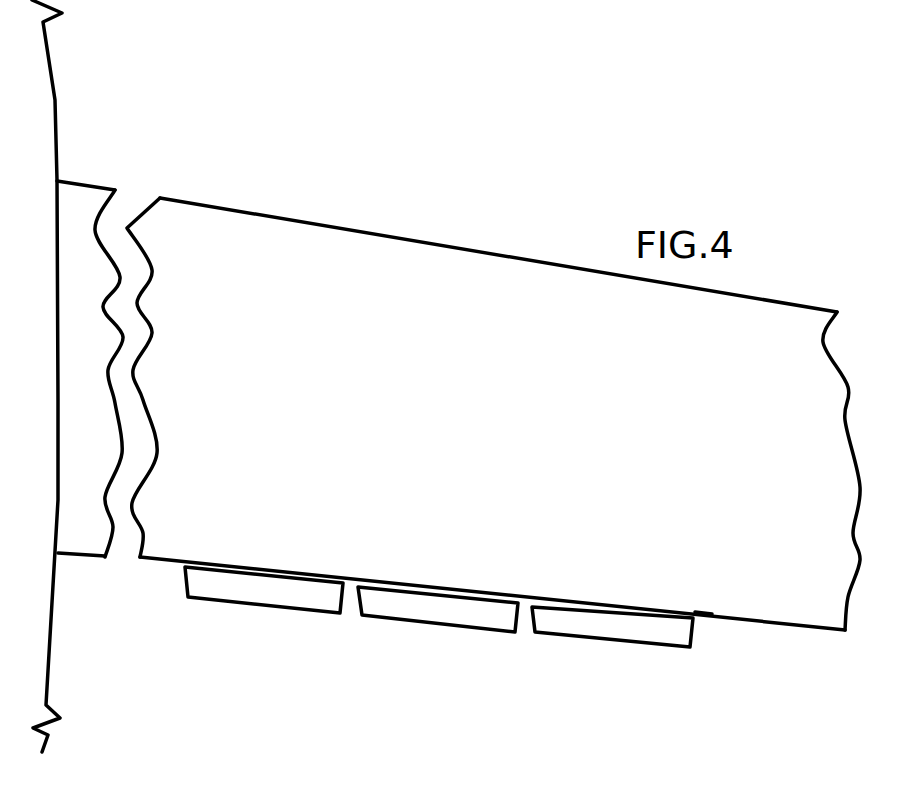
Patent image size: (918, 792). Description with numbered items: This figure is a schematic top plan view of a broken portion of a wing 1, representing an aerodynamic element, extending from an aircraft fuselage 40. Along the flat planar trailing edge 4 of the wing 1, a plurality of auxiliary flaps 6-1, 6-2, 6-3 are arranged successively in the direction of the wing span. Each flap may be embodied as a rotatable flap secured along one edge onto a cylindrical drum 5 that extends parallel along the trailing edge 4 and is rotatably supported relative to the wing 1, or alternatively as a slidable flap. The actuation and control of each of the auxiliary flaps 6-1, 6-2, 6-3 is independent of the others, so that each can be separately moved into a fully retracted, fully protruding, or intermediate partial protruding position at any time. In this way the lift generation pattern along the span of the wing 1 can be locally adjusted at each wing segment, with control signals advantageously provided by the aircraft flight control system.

The aircraft fuselage 40 is at (55, 100).
The wing 1 is at (443, 382).
The trailing edge 4 is at (740, 623).
The cylindrical drum 5 is at (700, 620).
The auxiliary flap 6-1 is at (223, 583).
The auxiliary flap 6-2 is at (407, 602).
The auxiliary flap 6-3 is at (582, 622).